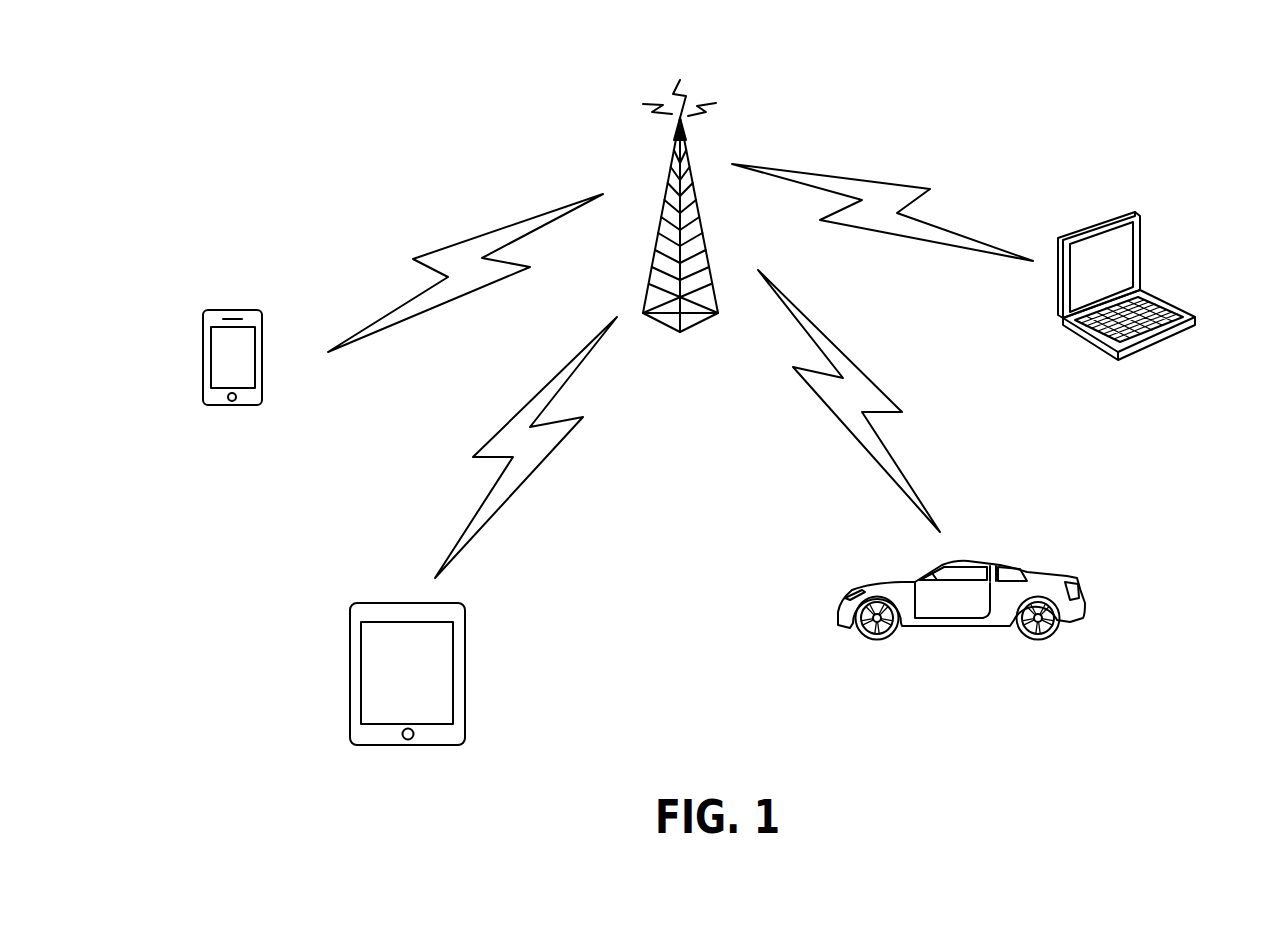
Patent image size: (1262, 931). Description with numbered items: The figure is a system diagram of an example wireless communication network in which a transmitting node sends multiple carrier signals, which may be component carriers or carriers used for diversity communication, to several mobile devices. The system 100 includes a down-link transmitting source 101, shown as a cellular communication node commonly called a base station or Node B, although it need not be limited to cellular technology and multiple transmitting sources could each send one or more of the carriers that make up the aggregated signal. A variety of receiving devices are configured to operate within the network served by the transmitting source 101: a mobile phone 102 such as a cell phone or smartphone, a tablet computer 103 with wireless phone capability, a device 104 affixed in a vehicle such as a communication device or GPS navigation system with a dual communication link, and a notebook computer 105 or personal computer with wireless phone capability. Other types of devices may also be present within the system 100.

The system 100 is at (1088, 105).
The transmitting source 101 is at (690, 167).
The mobile phone 102 is at (203, 339).
The tablet computer 103 is at (350, 636).
The device affixed in a vehicle 104 is at (1040, 569).
The notebook computer 105 is at (1162, 298).